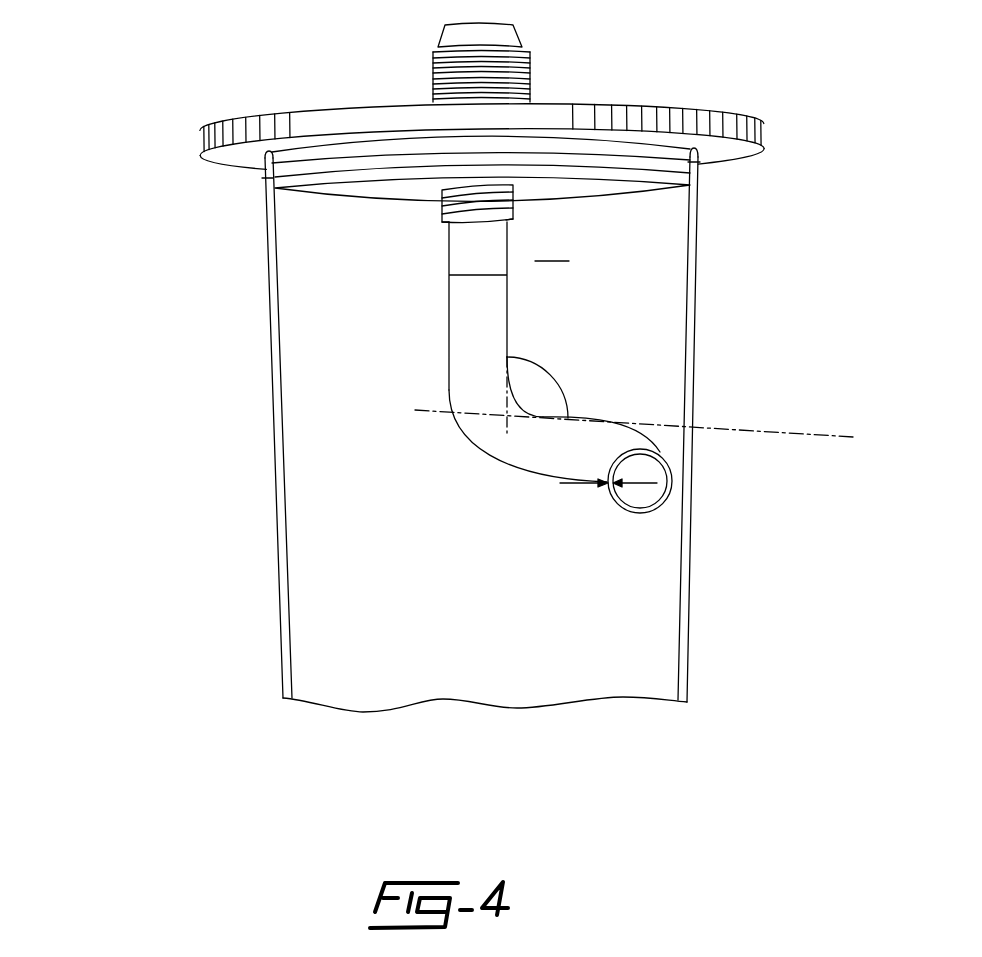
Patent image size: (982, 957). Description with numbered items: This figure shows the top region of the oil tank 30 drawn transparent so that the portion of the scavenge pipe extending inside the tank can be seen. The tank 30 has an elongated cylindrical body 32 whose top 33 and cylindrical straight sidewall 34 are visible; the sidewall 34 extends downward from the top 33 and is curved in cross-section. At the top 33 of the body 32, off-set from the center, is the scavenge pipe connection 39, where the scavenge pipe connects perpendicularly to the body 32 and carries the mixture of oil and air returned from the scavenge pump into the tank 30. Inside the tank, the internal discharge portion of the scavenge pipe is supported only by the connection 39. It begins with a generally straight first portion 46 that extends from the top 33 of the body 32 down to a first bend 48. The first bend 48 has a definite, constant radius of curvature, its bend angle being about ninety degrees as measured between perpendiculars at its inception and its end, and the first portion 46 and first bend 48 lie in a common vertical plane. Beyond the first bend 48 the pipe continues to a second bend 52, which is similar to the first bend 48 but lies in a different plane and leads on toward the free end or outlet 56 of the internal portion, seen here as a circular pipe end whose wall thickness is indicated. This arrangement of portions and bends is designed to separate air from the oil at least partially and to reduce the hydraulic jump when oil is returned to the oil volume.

The tank 30 is at (113, 158).
The body 32 is at (259, 400).
The top 33 is at (210, 161).
The sidewall 34 is at (290, 293).
The scavenge pipe connection 39 is at (502, 209).
The first portion 46 is at (492, 309).
The first bend 48 is at (542, 391).
The second bend 52 is at (672, 431).
The outlet 56 is at (673, 472).